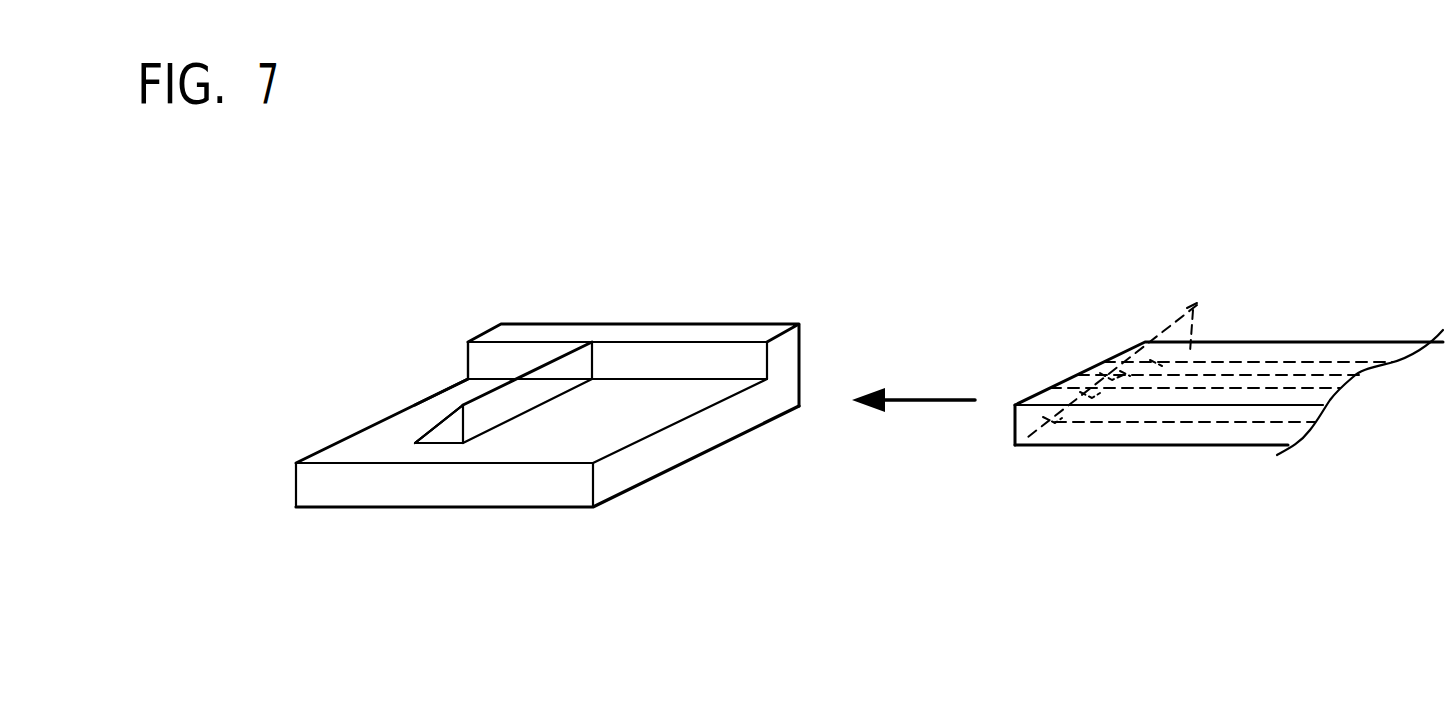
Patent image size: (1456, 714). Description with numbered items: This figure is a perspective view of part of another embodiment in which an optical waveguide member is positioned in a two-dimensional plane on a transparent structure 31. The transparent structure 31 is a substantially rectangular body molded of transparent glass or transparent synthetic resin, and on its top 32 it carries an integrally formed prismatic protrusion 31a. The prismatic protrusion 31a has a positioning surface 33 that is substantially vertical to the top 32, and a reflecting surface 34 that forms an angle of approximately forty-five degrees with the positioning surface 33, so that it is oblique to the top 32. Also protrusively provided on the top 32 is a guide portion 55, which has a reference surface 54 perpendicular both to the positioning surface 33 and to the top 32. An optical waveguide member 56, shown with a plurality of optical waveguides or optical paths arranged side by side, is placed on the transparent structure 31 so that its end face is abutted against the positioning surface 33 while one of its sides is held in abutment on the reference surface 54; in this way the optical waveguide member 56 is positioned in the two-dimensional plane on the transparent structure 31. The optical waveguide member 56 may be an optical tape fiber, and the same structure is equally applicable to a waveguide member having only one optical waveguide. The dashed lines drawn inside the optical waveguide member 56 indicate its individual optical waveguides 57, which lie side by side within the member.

The transparent structure 31 is at (353, 498).
The prismatic protrusion 31a is at (446, 435).
The top 32 is at (456, 393).
The positioning surface 33 is at (583, 365).
The reflecting surface 34 is at (437, 421).
The reference surface 54 is at (716, 352).
The guide portion 55 is at (797, 362).
The optical waveguide member 56 is at (1316, 342).
The embedded optical fiber 57 is at (1121, 348).